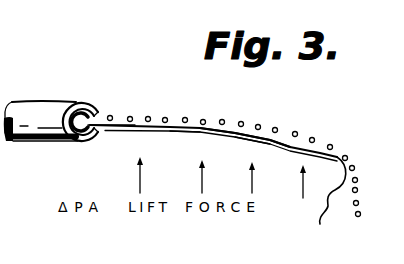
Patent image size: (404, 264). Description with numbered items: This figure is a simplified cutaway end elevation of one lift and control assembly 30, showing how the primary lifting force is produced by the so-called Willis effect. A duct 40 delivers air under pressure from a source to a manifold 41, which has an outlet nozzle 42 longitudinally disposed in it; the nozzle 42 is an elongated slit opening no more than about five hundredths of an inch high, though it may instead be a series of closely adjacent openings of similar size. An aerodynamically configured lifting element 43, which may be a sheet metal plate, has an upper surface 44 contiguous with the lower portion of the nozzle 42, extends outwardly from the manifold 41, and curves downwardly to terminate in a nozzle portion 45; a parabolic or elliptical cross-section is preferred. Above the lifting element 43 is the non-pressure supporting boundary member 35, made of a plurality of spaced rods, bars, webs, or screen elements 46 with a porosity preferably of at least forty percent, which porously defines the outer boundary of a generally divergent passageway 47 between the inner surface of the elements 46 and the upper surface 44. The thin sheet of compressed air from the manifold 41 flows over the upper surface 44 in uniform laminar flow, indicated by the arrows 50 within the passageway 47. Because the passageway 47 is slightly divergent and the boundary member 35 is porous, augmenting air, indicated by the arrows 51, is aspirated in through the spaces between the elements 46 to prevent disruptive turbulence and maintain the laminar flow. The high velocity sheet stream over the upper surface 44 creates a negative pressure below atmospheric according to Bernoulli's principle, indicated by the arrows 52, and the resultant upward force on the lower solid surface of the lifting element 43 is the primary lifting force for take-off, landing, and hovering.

The lift and control assembly 30 is at (129, 110).
The non-pressure supporting boundary member 35 is at (265, 122).
The duct 40 is at (43, 108).
The manifold 41 is at (86, 106).
The outlet nozzle 42 is at (70, 142).
The lifting element 43 is at (187, 134).
The upper surface 44 is at (248, 131).
The nozzle portion 45 is at (324, 203).
The screen elements 46 is at (241, 121).
The divergent passageway 47 is at (315, 138).
The arrows indicating laminar flow 50 is at (121, 135).
The arrows indicating augmenting air 51 is at (182, 129).
The arrows indicating lift force 52 is at (252, 175).